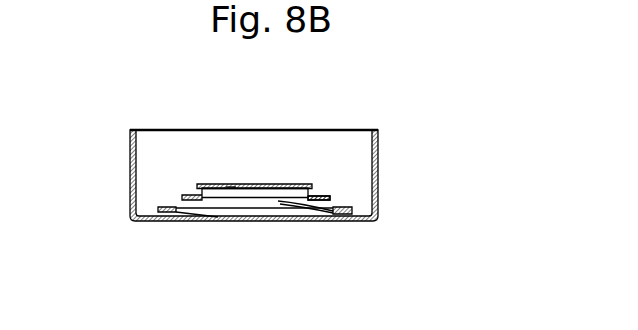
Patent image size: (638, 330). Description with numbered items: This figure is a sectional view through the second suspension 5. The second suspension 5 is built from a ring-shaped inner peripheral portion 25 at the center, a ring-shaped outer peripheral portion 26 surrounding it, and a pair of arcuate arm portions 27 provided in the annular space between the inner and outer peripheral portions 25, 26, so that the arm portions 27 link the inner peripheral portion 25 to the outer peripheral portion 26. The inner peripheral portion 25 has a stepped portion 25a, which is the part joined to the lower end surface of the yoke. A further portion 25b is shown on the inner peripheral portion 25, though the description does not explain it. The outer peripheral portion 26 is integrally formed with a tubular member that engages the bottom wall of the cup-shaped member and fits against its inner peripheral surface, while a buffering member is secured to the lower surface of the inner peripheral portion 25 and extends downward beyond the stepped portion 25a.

The second suspension 5 is at (408, 112).
The inner peripheral portion 25 is at (190, 181).
The stepped portion 25a is at (325, 193).
The contact plate portion 25b is at (232, 188).
The outer peripheral portion 26 is at (362, 218).
The arm portions 27 is at (341, 207).